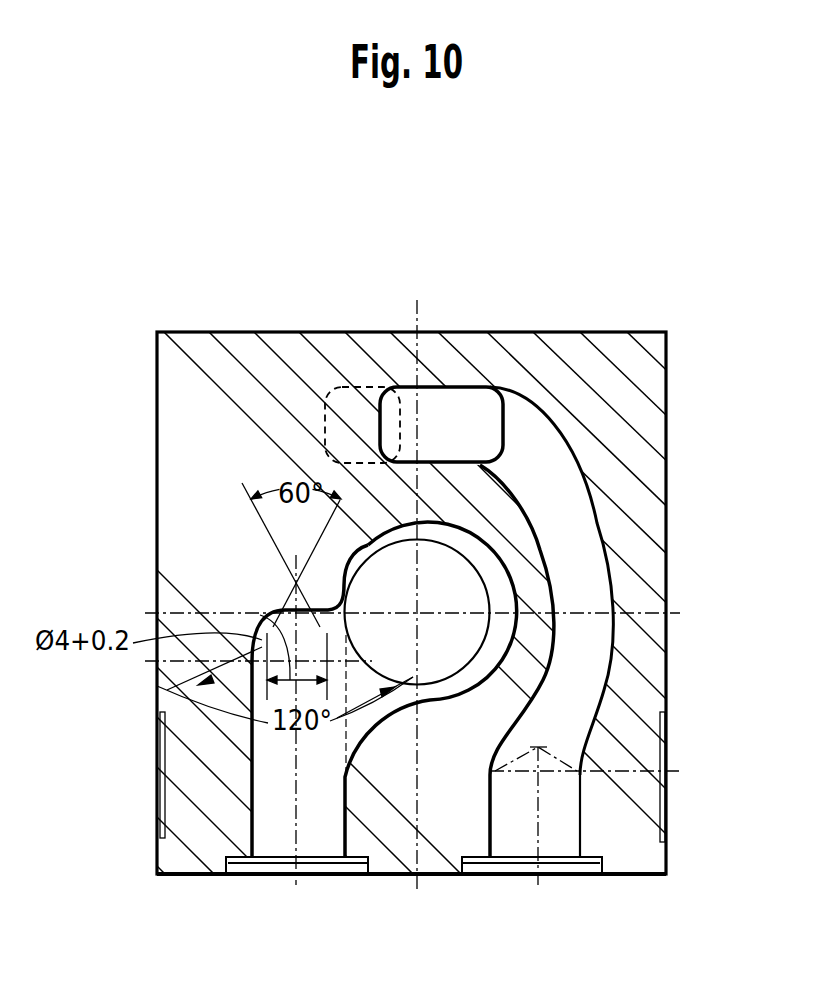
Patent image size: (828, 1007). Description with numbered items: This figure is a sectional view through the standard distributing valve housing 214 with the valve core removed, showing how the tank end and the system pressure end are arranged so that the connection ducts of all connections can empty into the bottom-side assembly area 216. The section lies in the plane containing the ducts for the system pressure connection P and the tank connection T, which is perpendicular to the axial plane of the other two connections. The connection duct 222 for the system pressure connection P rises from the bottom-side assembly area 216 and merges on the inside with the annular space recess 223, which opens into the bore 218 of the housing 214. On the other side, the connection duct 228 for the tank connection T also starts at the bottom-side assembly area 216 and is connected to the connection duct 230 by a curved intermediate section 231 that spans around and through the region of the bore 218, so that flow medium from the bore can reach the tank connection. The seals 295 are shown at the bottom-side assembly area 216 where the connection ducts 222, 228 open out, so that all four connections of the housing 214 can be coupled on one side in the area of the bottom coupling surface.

The standard distributing valve housing 214 is at (279, 372).
The connection duct 230 is at (447, 408).
The curved intermediate section 231 is at (580, 543).
The bore 218 is at (470, 633).
The annular space recess 223 is at (360, 546).
The connection duct 222 is at (253, 823).
The connection duct 228 is at (490, 836).
The bottom-side assembly area 216 is at (200, 877).
The seal ring 295 is at (243, 877).